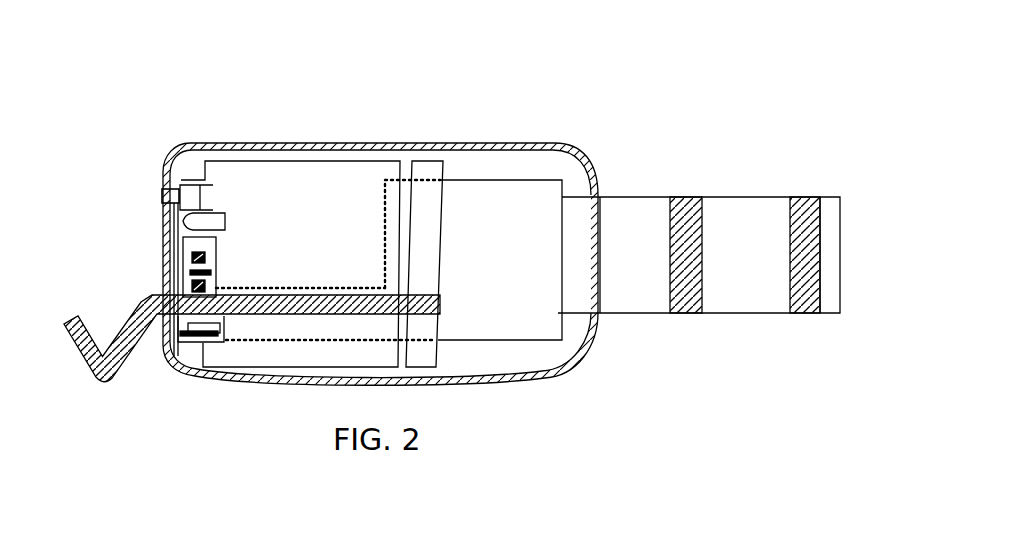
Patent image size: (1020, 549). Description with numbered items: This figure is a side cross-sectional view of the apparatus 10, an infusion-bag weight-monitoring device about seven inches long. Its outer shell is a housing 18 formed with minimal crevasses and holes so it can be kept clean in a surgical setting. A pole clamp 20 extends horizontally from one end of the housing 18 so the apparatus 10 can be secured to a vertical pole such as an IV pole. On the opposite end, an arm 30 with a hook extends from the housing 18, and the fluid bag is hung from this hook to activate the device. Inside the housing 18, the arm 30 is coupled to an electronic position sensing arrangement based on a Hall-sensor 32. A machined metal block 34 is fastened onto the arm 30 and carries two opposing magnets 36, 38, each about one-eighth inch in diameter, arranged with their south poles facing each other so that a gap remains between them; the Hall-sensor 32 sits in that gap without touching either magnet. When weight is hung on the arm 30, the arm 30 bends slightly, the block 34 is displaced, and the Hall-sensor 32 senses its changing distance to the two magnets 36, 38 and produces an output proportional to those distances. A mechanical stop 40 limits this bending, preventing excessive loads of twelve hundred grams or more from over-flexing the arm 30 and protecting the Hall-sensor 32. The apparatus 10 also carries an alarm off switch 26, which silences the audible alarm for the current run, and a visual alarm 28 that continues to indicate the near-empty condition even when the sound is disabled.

The apparatus 10 is at (334, 70).
The housing 18 is at (528, 382).
The pole clamp 20 is at (632, 300).
The alarm off switch 26 is at (163, 197).
The visual alarm 28 is at (181, 222).
The arm 30 is at (118, 378).
The Hall-sensor 32 is at (214, 273).
The machined metal block 34 is at (183, 247).
The magnet 36 is at (192, 258).
The magnet 38 is at (192, 287).
The mechanical stop 40 is at (187, 334).